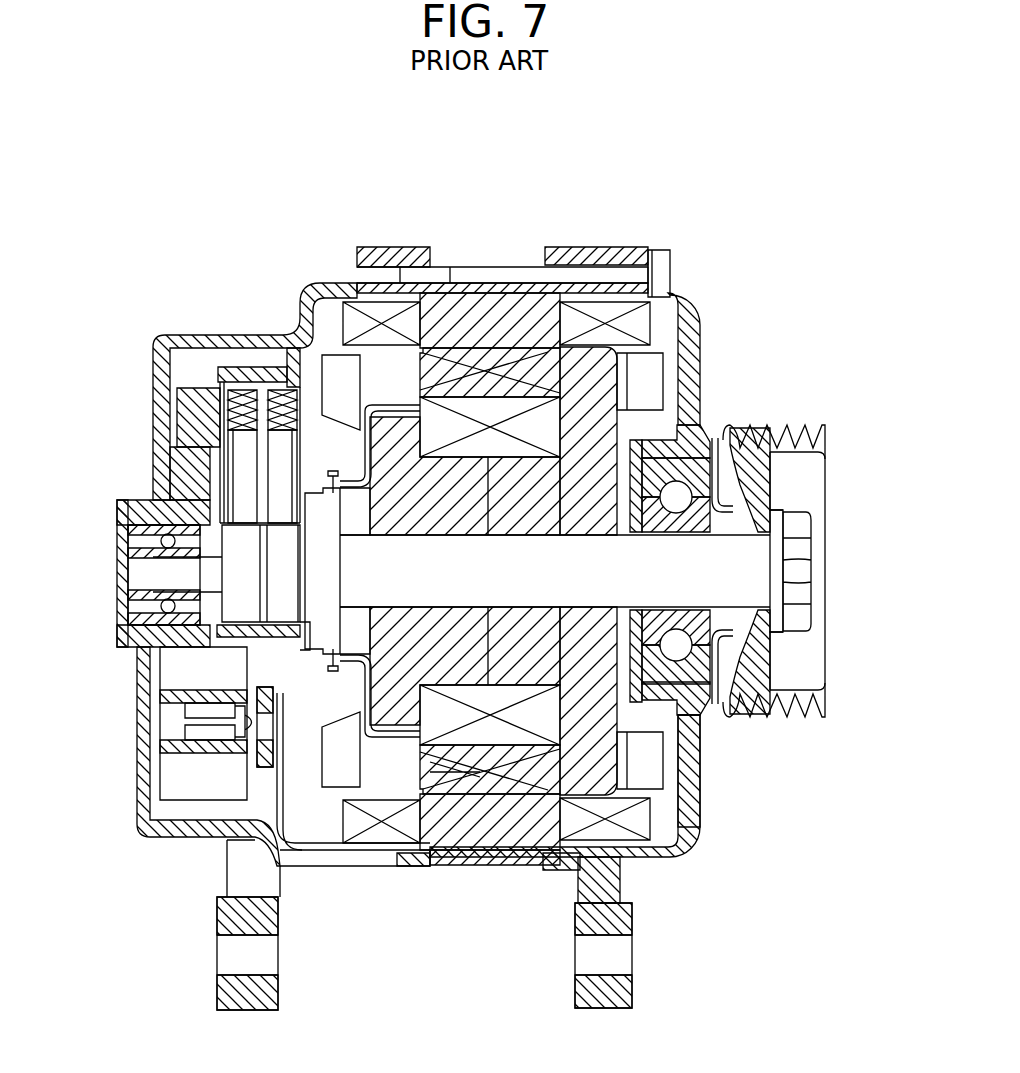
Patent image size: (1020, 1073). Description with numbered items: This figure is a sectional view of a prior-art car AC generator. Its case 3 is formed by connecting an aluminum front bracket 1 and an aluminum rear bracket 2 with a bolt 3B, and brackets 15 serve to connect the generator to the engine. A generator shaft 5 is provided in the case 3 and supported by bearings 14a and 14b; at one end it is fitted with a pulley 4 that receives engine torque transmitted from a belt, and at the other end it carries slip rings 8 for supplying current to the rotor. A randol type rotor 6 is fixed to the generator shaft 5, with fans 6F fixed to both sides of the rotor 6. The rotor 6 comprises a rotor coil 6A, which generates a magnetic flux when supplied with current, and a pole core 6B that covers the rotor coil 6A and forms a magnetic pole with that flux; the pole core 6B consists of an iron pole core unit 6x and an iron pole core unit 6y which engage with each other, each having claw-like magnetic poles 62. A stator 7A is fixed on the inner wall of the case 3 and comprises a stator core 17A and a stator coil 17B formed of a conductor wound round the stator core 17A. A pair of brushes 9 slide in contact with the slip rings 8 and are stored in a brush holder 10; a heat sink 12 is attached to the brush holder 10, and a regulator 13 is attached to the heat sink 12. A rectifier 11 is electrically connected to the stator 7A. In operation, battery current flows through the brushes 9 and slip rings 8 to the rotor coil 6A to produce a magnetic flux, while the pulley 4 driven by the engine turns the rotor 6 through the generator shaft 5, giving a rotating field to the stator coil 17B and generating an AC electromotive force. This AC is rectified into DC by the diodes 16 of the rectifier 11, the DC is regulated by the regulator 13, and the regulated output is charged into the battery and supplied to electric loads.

The front bracket 1 is at (697, 330).
The rear bracket 2 is at (238, 338).
The case 3 is at (711, 803).
The bolt 3B is at (666, 262).
The pulley 4 is at (810, 475).
The generator shaft 5 is at (748, 572).
The rotor 6 is at (630, 330).
The rotor coil 6A is at (555, 430).
The pole core 6B is at (620, 153).
The pole core unit 6x is at (397, 432).
The pole core unit 6y is at (567, 360).
The fans 6F is at (333, 360).
The stator 7A is at (530, 870).
The stator core 17A is at (500, 850).
The stator coil 17B is at (387, 843).
The claw-like magnetic poles 62 is at (428, 770).
The slip rings 8 is at (235, 573).
The brushes 9 is at (280, 510).
The brush holder 10 is at (215, 375).
The rectifier 11 is at (165, 718).
The heat sink 12 is at (190, 410).
The regulator 13 is at (195, 465).
The bearing 14a is at (707, 698).
The bearing 14b is at (150, 608).
The brackets 15 is at (270, 975).
The diodes 16 is at (215, 742).